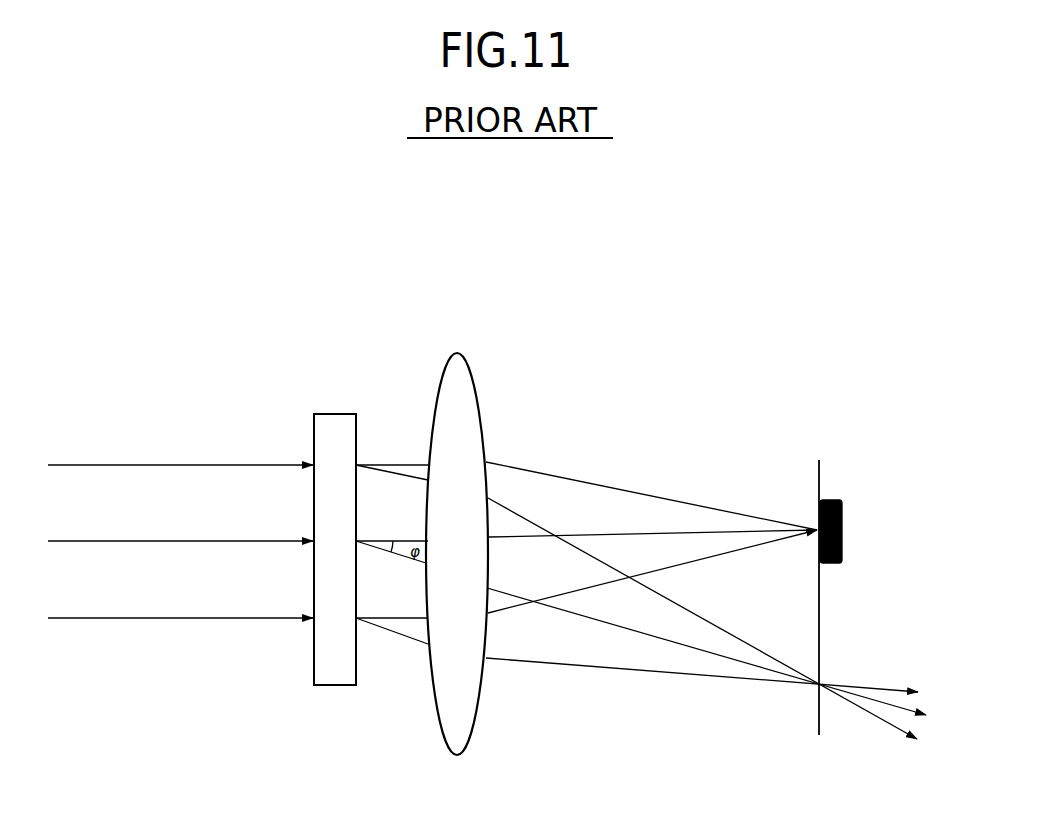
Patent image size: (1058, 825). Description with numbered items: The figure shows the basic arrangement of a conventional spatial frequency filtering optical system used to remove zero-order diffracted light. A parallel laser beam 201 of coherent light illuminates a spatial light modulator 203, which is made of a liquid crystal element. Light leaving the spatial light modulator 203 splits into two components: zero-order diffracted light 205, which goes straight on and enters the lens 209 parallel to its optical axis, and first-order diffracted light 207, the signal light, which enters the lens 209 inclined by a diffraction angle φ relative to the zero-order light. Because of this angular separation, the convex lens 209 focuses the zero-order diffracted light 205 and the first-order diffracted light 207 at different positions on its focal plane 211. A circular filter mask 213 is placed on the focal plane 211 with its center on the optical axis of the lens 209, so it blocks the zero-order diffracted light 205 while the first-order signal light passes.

The parallel laser beam 201 is at (177, 458).
The spatial light modulator 203 is at (335, 404).
The zero-order diffracted light 205 is at (587, 470).
The first-order diffracted light 207 is at (652, 684).
The lens 209 is at (467, 352).
The focal plane 211 is at (818, 717).
The filter mask 213 is at (833, 500).